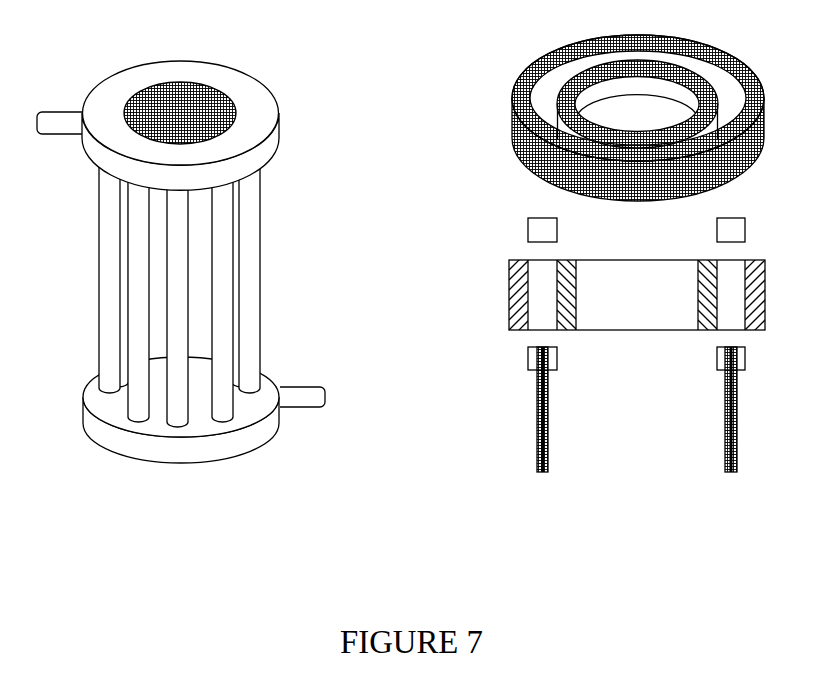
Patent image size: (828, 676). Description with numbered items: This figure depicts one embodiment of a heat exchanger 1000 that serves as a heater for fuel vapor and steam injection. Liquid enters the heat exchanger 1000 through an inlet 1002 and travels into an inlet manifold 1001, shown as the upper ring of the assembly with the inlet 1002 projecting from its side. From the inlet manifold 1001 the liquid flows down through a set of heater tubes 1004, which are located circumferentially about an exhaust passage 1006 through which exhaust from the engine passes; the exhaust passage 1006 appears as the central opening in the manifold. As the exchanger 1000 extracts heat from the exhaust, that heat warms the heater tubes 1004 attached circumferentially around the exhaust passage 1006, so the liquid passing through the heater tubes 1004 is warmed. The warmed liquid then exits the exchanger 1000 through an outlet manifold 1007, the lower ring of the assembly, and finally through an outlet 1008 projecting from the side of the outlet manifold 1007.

The heat exchanger 1000 is at (78, 236).
The inlet manifold 1001 is at (286, 121).
The inlet 1002 is at (41, 112).
The heater tubes 1004 is at (248, 302).
The exhaust passage 1006 is at (192, 96).
The outlet manifold 1007 is at (77, 389).
The outlet 1008 is at (306, 387).